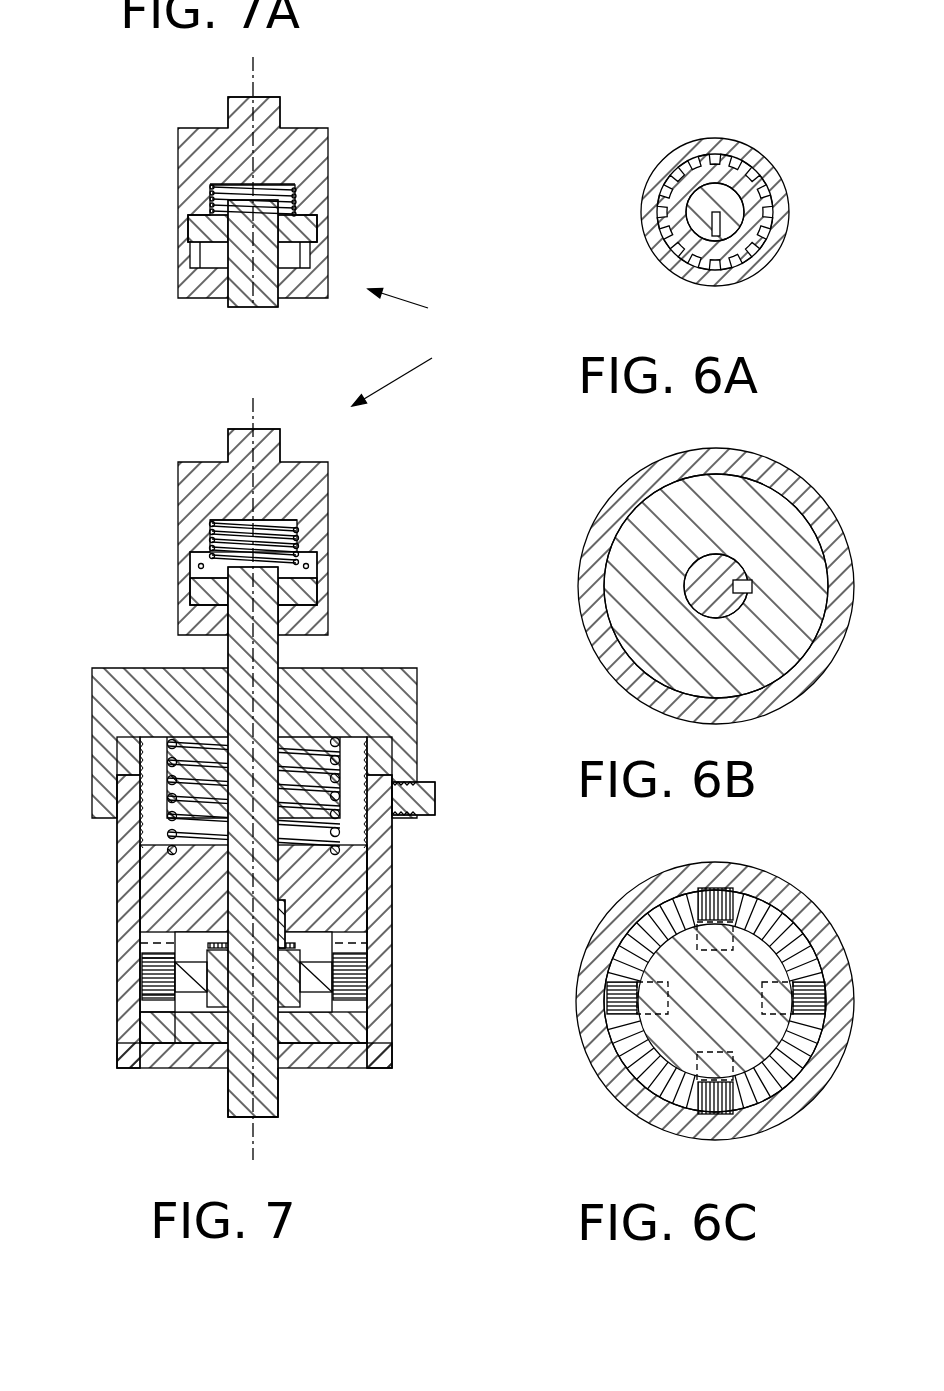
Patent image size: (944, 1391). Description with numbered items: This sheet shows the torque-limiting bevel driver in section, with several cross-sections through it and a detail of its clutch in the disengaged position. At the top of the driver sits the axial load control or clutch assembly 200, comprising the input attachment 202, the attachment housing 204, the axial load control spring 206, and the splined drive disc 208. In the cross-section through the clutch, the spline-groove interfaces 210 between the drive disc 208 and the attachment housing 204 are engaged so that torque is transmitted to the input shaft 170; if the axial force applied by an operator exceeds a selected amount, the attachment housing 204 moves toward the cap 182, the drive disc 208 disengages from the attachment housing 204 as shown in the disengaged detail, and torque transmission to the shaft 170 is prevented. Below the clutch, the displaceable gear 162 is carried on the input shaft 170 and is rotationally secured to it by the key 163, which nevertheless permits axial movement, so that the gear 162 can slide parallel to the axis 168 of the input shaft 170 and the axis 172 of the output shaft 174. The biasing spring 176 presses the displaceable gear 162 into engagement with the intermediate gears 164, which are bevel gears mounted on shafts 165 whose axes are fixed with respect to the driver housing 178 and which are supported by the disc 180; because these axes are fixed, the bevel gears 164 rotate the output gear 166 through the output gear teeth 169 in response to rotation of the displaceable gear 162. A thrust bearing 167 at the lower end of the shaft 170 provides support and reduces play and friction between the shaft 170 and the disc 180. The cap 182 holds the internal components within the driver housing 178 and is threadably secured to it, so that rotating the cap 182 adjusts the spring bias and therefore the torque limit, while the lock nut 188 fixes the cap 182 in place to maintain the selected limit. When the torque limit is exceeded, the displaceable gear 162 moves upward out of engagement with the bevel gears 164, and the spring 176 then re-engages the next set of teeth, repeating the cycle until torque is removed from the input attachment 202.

In FIG. 7, the displaceable gear 162 is at (357, 932).
In FIG. 6B, the displaceable gear 162 is at (625, 578).
In FIG. 7, the key 163 is at (275, 915).
In FIG. 6B, the key 163 is at (752, 583).
In FIG. 7, the intermediate gears 164 is at (350, 978).
In FIG. 6C, the intermediate gears 164 is at (822, 990).
In FIG. 7, the shafts 165 is at (360, 1037).
In FIG. 6C, the shafts 165 is at (665, 1027).
In FIG. 7, the output gear 166 is at (357, 1020).
In FIG. 6C, the output gear 166 is at (800, 1115).
In FIG. 7, the thrust bearing 167 is at (200, 962).
In FIG. 7A, the axis 168 is at (283, 102).
In FIG. 7, the axis 168 is at (282, 430).
In FIG. 6C, the output gear teeth 169 is at (657, 1100).
In FIG. 7A, the input shaft 170 is at (253, 253).
In FIG. 7, the input shaft 170 is at (240, 652).
In FIG. 6A, the input shaft 170 is at (713, 265).
In FIG. 6B, the input shaft 170 is at (700, 615).
In FIG. 7, the axis 172 is at (228, 1113).
In FIG. 7, the output shaft 174 is at (263, 1093).
In FIG. 7, the biasing spring 176 is at (378, 845).
In FIG. 7, the driver housing 178 is at (380, 850).
In FIG. 6B, the driver housing 178 is at (707, 463).
In FIG. 6C, the driver housing 178 is at (833, 970).
In FIG. 7, the disc 180 is at (190, 1012).
In FIG. 6C, the disc 180 is at (757, 1055).
In FIG. 7, the cap 182 is at (382, 703).
In FIG. 7, the lock nut 188 is at (432, 792).
In FIG. 7A, the clutch assembly 200 is at (427, 308).
In FIG. 7, the clutch assembly 200 is at (419, 377).
In FIG. 7A, the input attachment 202 is at (295, 160).
In FIG. 7, the input attachment 202 is at (285, 465).
In FIG. 7A, the attachment housing 204 is at (293, 162).
In FIG. 7, the attachment housing 204 is at (298, 500).
In FIG. 6A, the attachment housing 204 is at (725, 143).
In FIG. 7A, the axial load control spring 206 is at (210, 190).
In FIG. 7, the axial load control spring 206 is at (212, 540).
In FIG. 7A, the splined drive disc 208 is at (195, 238).
In FIG. 7, the splined drive disc 208 is at (190, 612).
In FIG. 6A, the splined drive disc 208 is at (742, 262).
In FIG. 6A, the spline-groove interfaces 210 is at (665, 187).